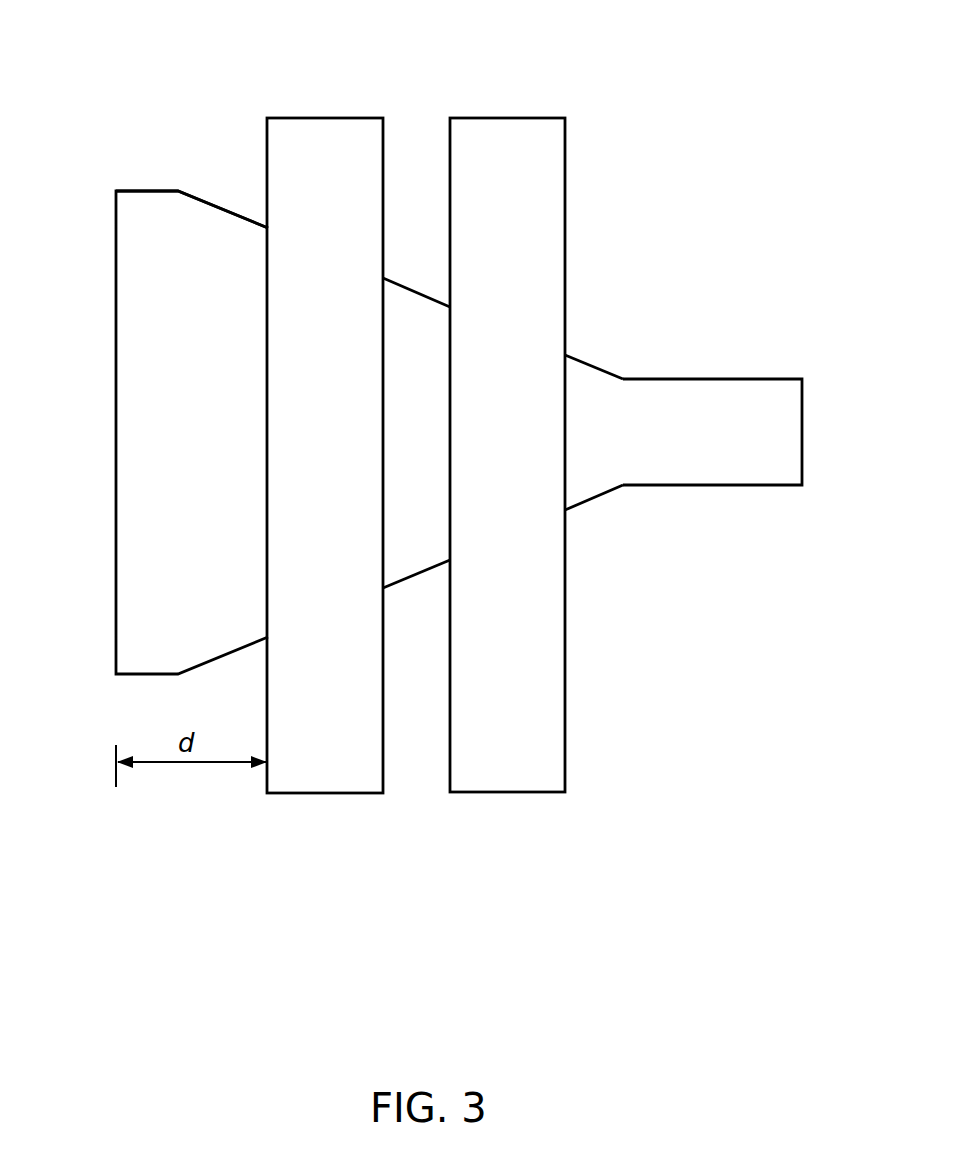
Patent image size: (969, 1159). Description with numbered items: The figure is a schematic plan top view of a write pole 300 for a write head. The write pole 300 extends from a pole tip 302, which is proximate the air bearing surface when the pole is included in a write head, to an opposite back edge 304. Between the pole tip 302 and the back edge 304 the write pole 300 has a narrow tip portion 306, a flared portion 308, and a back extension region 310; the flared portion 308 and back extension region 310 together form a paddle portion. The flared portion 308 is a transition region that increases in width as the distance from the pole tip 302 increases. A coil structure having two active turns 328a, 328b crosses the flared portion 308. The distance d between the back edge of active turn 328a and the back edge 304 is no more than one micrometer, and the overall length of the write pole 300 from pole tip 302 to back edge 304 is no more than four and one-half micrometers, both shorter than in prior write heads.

The write pole 300 is at (651, 209).
The pole tip 302 is at (802, 452).
The back edge 304 is at (116, 380).
The tip portion 306 is at (692, 375).
The flared portion 308 is at (592, 506).
The back extension region 310 is at (153, 186).
The active turn 328a is at (325, 118).
The active turn 328b is at (522, 118).